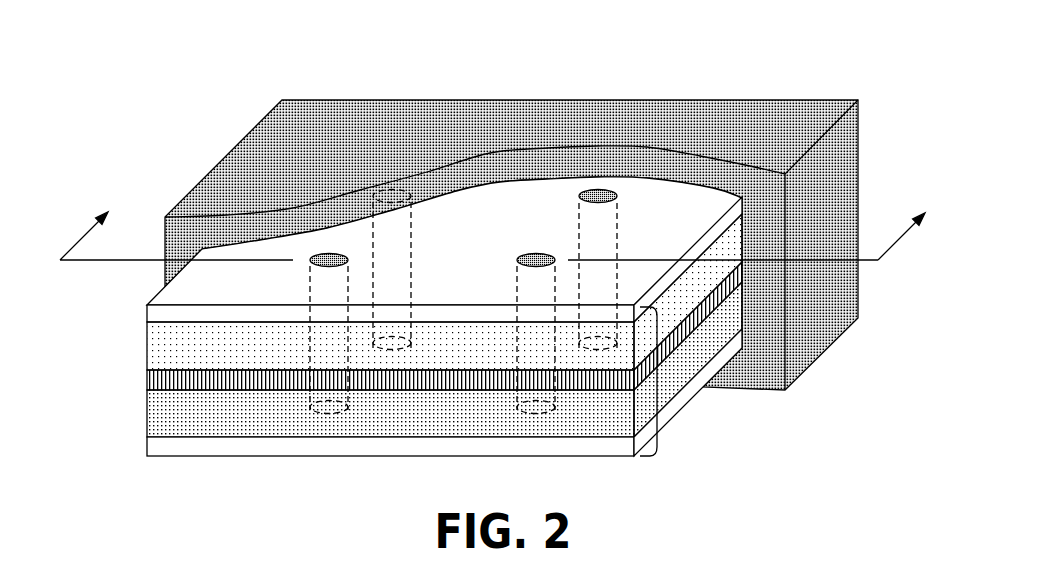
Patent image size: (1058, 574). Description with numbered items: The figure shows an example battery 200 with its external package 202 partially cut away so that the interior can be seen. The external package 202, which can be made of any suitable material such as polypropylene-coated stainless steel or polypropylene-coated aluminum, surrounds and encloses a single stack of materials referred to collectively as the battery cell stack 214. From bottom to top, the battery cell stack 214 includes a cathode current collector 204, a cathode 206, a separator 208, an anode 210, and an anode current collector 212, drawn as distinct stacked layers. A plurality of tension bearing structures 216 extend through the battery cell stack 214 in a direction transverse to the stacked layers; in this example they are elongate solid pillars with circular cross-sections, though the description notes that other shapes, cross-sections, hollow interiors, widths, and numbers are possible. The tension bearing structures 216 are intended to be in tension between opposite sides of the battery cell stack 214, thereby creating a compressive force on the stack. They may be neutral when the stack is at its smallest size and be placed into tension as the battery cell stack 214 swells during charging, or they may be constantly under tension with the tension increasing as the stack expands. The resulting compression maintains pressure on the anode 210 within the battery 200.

The battery 200 is at (500, 233).
The external package 202 is at (237, 173).
The cathode current collector 204 is at (156, 450).
The cathode 206 is at (156, 418).
The separator 208 is at (156, 384).
The anode 210 is at (156, 350).
The anode current collector 212 is at (156, 317).
The battery cell stack 214 is at (660, 381).
The tension bearing structures 216 is at (338, 288).